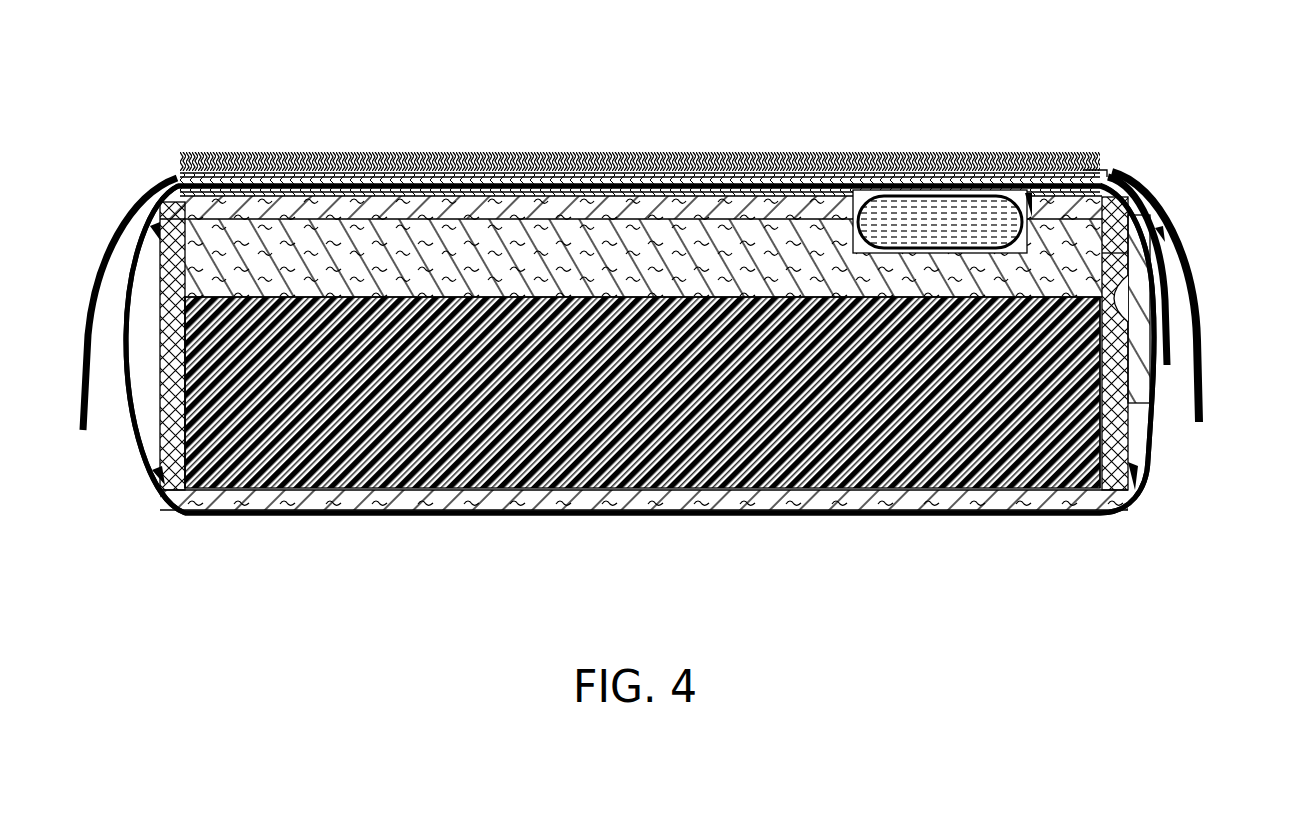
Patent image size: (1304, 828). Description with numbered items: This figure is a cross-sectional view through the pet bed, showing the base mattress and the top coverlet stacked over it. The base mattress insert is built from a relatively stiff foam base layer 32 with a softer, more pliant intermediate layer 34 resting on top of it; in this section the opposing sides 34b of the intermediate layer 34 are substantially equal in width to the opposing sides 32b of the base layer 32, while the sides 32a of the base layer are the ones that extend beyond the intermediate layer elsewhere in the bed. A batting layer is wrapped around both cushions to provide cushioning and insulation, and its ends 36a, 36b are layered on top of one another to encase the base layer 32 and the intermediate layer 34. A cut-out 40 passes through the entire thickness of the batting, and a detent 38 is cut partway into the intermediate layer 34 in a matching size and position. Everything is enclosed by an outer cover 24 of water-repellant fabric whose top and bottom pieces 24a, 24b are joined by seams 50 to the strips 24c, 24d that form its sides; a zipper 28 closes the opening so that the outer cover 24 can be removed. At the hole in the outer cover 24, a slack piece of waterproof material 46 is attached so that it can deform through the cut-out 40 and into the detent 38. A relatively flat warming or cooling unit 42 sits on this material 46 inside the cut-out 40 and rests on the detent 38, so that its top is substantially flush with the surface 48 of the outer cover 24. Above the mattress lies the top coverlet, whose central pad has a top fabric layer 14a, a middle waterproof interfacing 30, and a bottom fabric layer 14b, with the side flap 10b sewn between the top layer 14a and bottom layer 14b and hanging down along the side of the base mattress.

The side flap 10b is at (85, 322).
The top fabric layer 14a is at (832, 197).
The bottom fabric layer 14b is at (793, 183).
The outer cover 24 is at (1147, 462).
The top piece of outer cover 24a is at (162, 175).
The bottom piece of outer cover 24b is at (213, 513).
The side strip of outer cover 24c is at (120, 432).
The side strip of outer cover 24d is at (1160, 323).
The zipper 28 is at (1168, 358).
The middle waterproof interfacing 30 is at (724, 190).
The base layer 32 is at (740, 478).
The opposing sides of base layer 32a is at (180, 450).
The opposing sides of base layer 32b is at (1108, 515).
The intermediate layer 34 is at (662, 235).
The opposing sides of intermediate layer 34b is at (160, 275).
The end of batting layer 36a is at (1113, 430).
The end of batting layer 36b is at (1157, 303).
The detent 38 is at (1168, 262).
The cut-out 40 is at (1035, 200).
The warming or cooling unit 42 is at (905, 210).
The waterproof material 46 is at (1113, 187).
The surface of outer cover 48 is at (593, 177).
The seams 50 is at (157, 225).